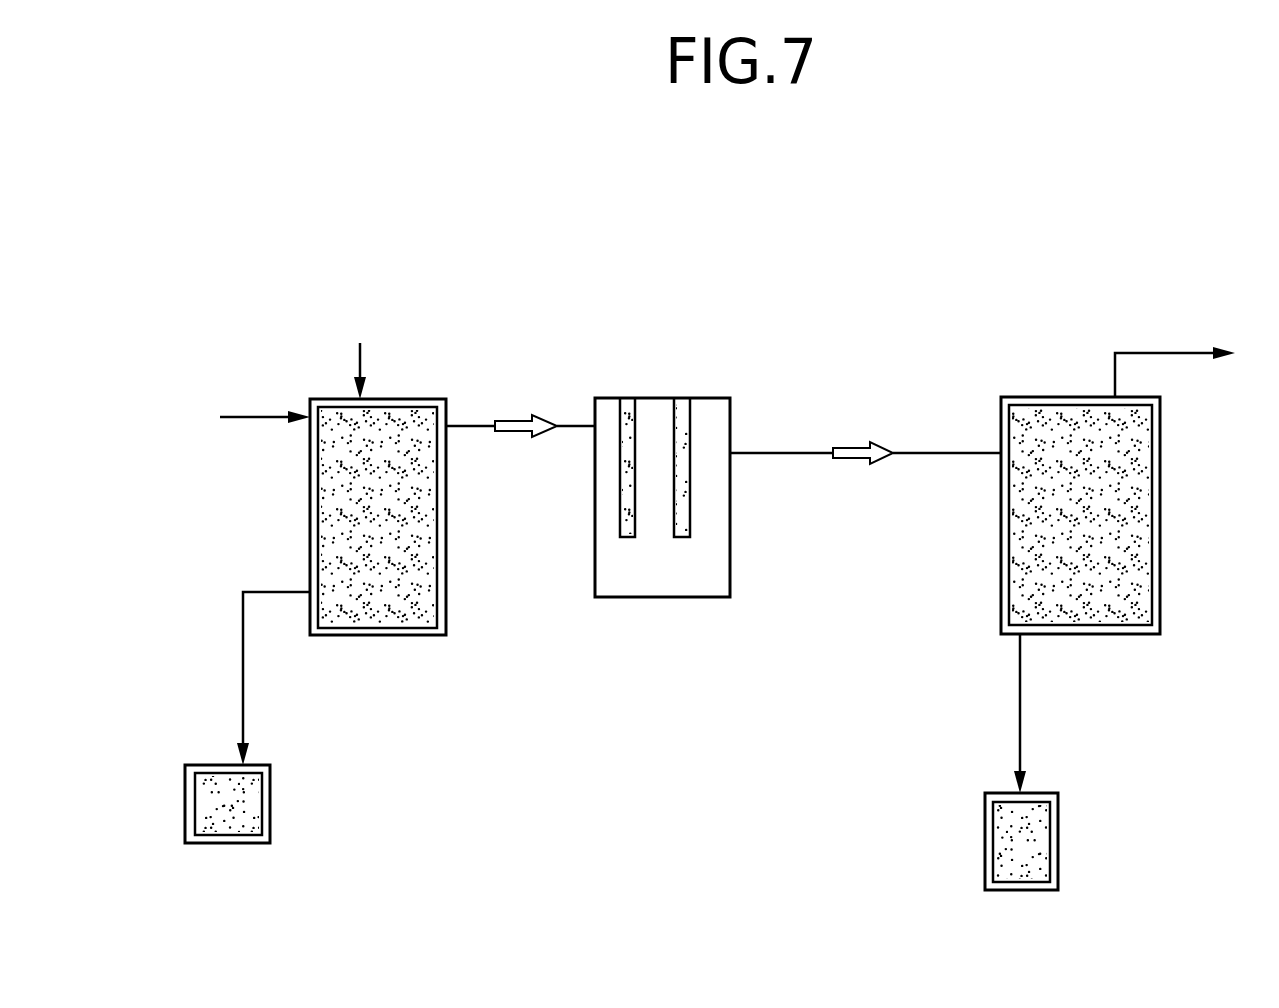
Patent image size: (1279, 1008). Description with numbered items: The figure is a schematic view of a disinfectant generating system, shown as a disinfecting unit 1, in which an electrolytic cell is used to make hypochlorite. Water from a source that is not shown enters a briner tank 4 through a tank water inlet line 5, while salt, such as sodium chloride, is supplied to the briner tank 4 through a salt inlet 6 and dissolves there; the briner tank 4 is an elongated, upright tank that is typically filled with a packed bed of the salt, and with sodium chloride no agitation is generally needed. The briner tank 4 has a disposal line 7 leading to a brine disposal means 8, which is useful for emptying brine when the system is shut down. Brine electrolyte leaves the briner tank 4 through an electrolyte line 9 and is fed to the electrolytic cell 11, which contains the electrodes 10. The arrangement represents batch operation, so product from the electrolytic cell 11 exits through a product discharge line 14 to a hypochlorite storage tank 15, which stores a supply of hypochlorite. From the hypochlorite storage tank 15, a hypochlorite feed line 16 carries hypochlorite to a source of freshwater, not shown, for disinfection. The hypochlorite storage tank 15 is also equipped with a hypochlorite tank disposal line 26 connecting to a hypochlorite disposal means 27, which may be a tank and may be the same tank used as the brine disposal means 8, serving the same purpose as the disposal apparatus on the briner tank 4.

The disinfecting unit 1 is at (742, 290).
The briner tank 4 is at (387, 637).
The tank water inlet line 5 is at (240, 418).
The salt inlet 6 is at (369, 366).
The disposal line 7 is at (240, 689).
The brine disposal means 8 is at (227, 845).
The electrolyte line 9 is at (512, 418).
The electrodes 10 is at (622, 522).
The electrolytic cell 11 is at (730, 572).
The product discharge line 14 is at (853, 443).
The hypochlorite storage tank 15 is at (1137, 635).
The hypochlorite feed line 16 is at (1185, 352).
The hypochlorite tank disposal line 26 is at (1020, 723).
The hypochlorite disposal means 27 is at (985, 867).